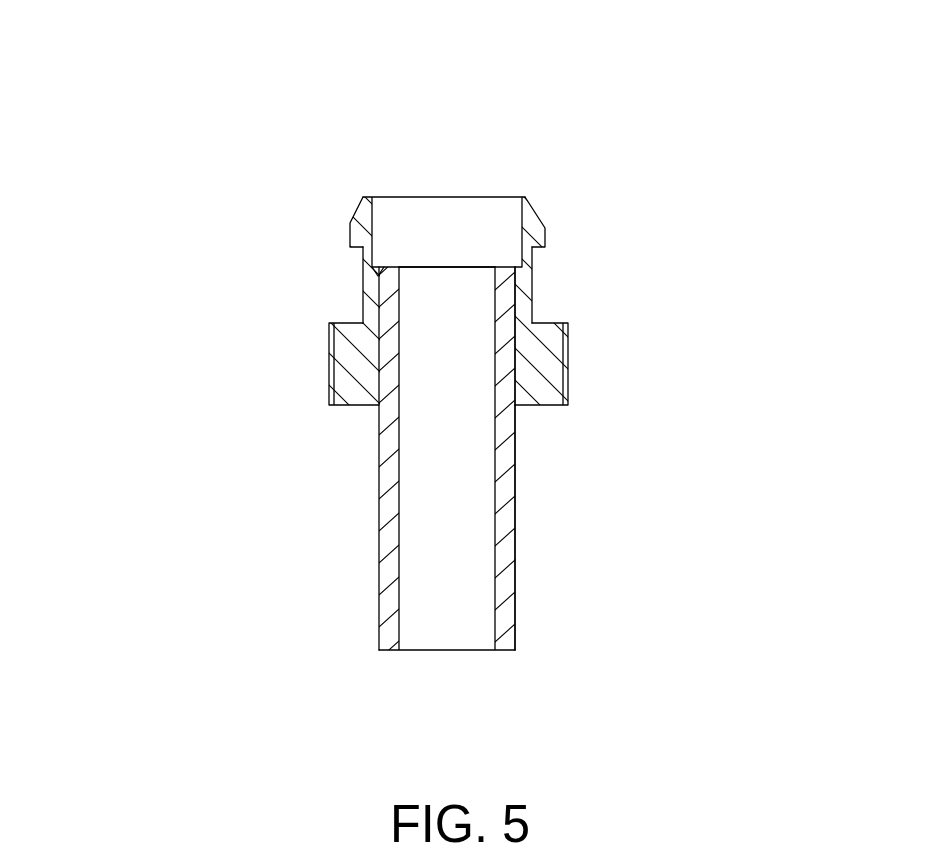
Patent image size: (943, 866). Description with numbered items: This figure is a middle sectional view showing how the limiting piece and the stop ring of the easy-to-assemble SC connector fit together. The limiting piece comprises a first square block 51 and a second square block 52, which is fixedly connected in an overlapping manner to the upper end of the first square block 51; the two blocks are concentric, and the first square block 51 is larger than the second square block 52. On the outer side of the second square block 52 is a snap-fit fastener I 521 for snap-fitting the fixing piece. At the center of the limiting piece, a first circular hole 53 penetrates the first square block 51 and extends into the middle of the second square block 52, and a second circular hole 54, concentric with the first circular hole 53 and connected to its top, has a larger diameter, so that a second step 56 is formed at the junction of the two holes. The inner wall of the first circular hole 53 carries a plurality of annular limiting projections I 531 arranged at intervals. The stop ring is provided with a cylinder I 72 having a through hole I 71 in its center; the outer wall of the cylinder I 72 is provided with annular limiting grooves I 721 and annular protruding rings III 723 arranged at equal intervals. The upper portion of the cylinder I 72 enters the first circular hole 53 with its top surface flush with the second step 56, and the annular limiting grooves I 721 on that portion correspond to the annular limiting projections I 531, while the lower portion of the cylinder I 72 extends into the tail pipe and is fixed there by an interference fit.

The first square block 51 is at (352, 365).
The second square block 52 is at (366, 277).
The snap-fit fastener I 521 is at (362, 222).
The first circular hole 53 is at (467, 273).
The annular limiting projection I 531 is at (513, 370).
The second circular hole 54 is at (435, 218).
The second step 56 is at (374, 267).
The through hole I 71 is at (428, 545).
The cylinder I 72 is at (387, 523).
The annular limiting groove I 721 is at (515, 595).
The annular protruding ring III 723 is at (515, 518).